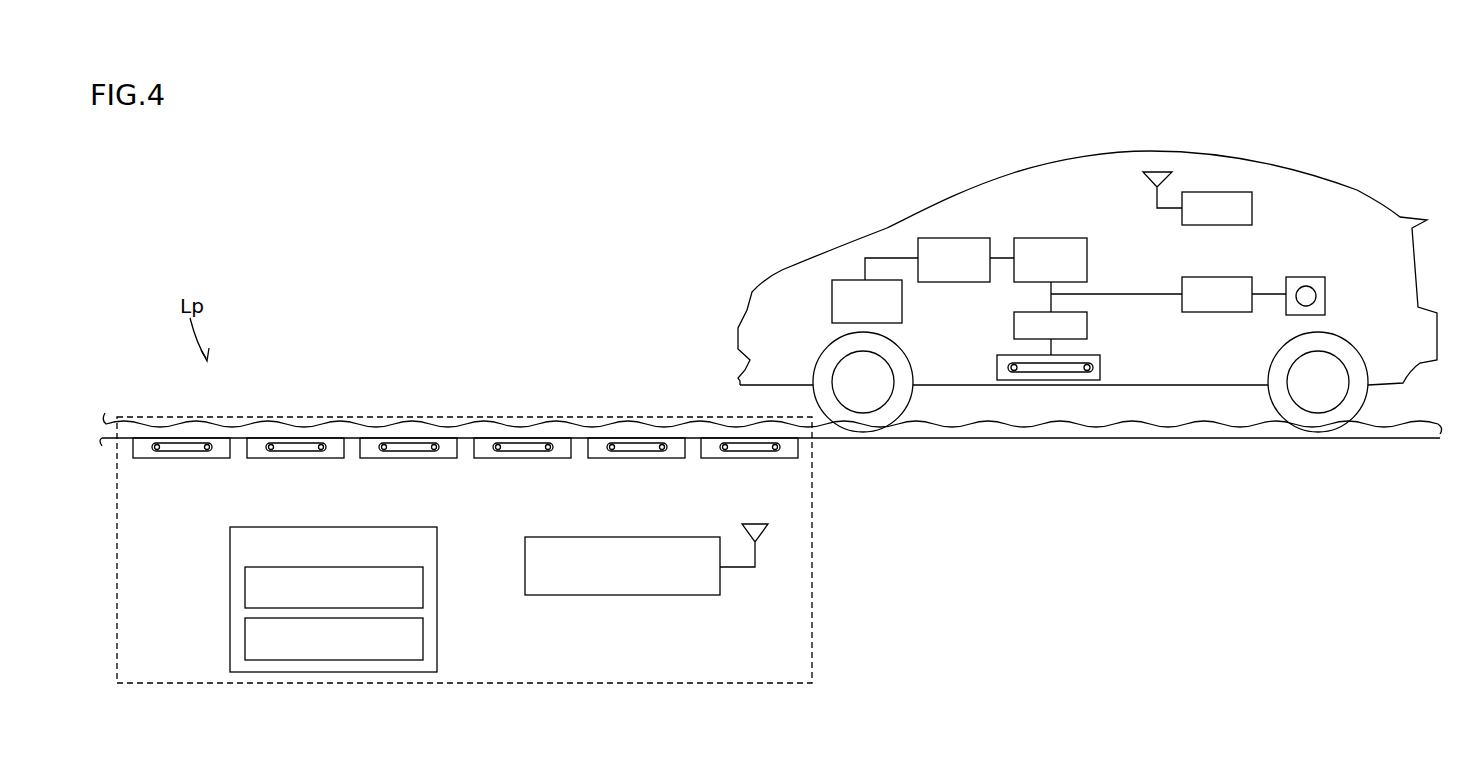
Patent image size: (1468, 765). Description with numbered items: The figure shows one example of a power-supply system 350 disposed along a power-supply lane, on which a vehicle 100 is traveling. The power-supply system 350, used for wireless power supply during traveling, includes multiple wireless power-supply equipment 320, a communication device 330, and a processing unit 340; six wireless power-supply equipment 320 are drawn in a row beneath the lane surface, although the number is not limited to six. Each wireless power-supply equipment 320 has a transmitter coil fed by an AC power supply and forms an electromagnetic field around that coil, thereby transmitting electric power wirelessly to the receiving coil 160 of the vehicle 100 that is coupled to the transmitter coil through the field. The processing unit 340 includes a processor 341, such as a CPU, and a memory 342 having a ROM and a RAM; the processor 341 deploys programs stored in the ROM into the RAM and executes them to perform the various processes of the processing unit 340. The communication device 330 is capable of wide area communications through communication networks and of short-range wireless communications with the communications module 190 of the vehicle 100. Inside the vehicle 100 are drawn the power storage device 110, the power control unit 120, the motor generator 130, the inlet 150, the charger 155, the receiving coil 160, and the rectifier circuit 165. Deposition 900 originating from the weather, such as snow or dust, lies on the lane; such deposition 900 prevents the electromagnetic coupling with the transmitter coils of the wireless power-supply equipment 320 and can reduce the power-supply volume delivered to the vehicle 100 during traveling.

The vehicle 100 is at (1320, 176).
The power storage device 110 is at (1040, 238).
The power control unit 120 is at (940, 238).
The motor generator 130 is at (830, 302).
The inlet 150 is at (1303, 277).
The charger 155 is at (1215, 277).
The receiving coil 160 is at (1051, 381).
The rectifier circuit 165 is at (1087, 325).
The communications module 190 is at (1252, 208).
The deposition 900 is at (1390, 421).
The wireless power-supply equipment 320 is at (202, 459).
The communication device 330 is at (695, 596).
The processing unit 340 is at (437, 546).
The processor 341 is at (423, 585).
The memory 342 is at (423, 638).
The power-supply system 350 is at (680, 684).